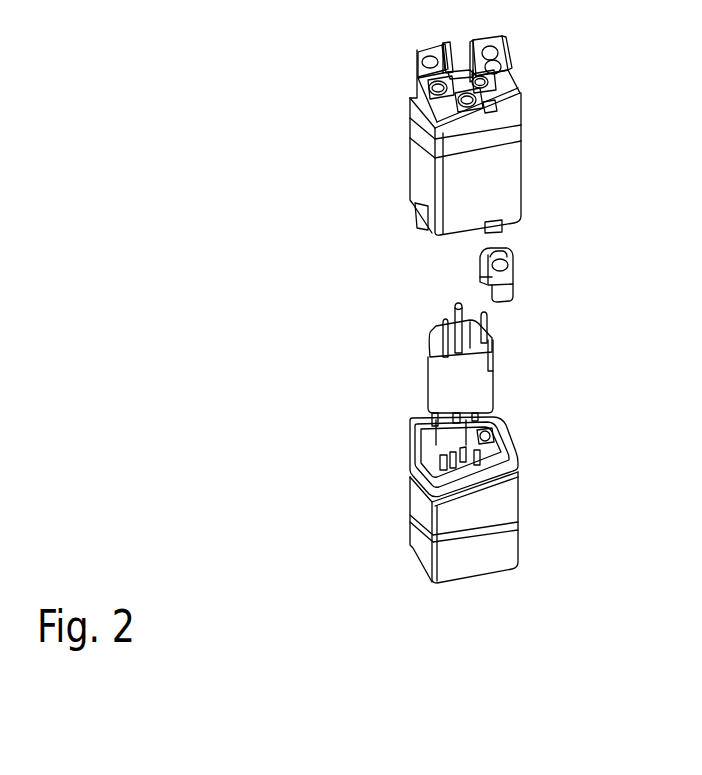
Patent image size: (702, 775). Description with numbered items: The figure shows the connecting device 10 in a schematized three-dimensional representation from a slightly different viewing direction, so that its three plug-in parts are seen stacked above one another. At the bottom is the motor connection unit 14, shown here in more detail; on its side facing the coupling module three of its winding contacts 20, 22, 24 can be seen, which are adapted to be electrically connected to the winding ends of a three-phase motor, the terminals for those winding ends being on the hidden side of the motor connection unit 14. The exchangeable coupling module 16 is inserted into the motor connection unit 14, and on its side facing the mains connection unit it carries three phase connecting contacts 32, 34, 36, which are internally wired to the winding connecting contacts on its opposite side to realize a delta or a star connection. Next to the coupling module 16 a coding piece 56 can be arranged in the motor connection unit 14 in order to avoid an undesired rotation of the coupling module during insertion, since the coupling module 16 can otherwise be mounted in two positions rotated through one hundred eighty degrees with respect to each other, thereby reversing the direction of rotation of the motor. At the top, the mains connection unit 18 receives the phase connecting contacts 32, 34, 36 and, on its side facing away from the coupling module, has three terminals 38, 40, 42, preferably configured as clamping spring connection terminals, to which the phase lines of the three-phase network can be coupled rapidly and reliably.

The connecting device 10 is at (372, 273).
The motor connection unit 14 is at (411, 470).
The exchangeable coupling module 16 is at (438, 380).
The mains connection unit 18 is at (414, 100).
The winding contact 20 is at (440, 459).
The winding contact 22 is at (462, 450).
The winding contact 24 is at (482, 452).
The phase connecting contact 32 is at (440, 327).
The phase connecting contact 34 is at (460, 307).
The phase connecting contact 36 is at (488, 326).
The terminal 38 is at (462, 98).
The terminal 40 is at (438, 90).
The terminal 42 is at (484, 83).
The coding piece 56 is at (505, 286).